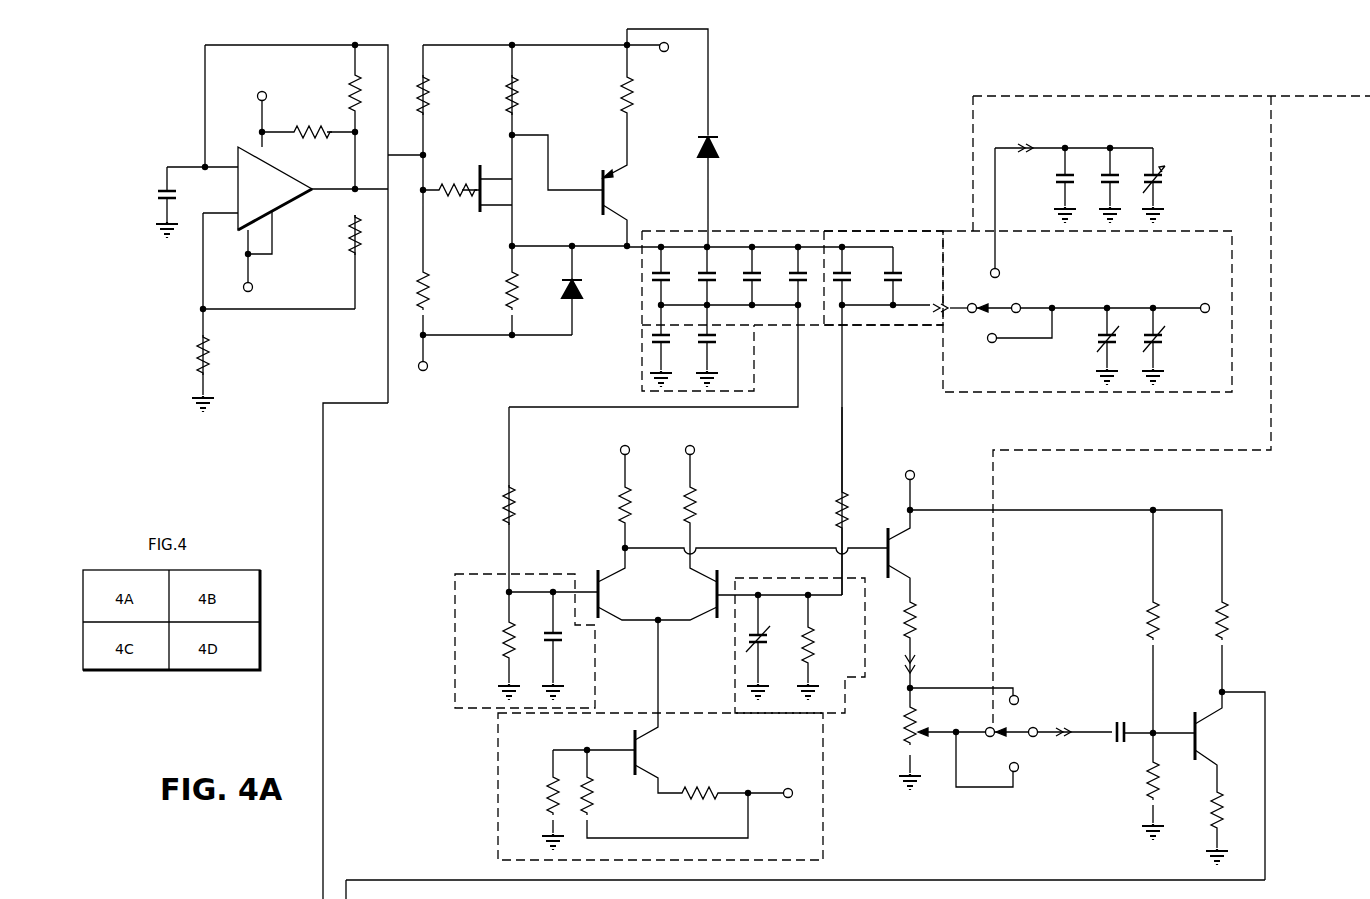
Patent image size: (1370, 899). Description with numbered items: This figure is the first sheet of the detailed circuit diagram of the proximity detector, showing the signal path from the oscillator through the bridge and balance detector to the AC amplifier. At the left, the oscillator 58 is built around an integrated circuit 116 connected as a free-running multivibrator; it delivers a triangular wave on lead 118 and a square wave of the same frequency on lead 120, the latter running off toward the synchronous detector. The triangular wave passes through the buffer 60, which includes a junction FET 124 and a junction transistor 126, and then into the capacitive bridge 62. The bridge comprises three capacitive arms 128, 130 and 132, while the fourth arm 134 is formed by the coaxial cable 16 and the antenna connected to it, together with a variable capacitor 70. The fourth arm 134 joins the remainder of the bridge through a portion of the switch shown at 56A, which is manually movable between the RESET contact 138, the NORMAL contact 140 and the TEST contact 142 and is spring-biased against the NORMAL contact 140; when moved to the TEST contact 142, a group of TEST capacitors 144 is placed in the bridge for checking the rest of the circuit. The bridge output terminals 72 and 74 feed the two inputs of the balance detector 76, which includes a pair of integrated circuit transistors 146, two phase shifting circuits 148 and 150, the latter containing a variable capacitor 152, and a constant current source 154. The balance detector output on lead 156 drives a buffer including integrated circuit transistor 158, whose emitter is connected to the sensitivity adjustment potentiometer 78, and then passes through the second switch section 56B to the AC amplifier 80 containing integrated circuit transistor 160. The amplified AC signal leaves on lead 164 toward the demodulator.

The oscillator 58 is at (166, 150).
The buffer 60 is at (381, 42).
The integrated circuit 116 is at (246, 160).
The lead 118 is at (404, 157).
The lead 120 is at (349, 403).
The junction FET 124 is at (477, 170).
The junction transistor 126 is at (600, 170).
The capacitive arm 128 is at (642, 308).
The capacitive arm 130 is at (642, 380).
The capacitive bridge 62 is at (760, 215).
The output terminal 72 is at (796, 312).
The output terminal 74 is at (840, 312).
The capacitive arm 132 is at (862, 326).
The fourth arm 134 is at (1114, 392).
The RESET contact 138 is at (984, 340).
The NORMAL contact 140 is at (1018, 314).
The switch portion 56A is at (1037, 350).
The TEST contact 142 is at (996, 266).
The TEST capacitors 144 is at (1112, 136).
The variable capacitor 70 is at (1102, 336).
The coaxial cable 16 is at (1204, 307).
The balance detector 76 is at (758, 526).
The integrated circuit transistors 146 is at (596, 574).
The phase shifting circuit 148 is at (474, 574).
The phase shifting circuit 150 is at (736, 700).
The variable capacitor 152 is at (752, 632).
The constant current source 154 is at (498, 778).
The lead 156 is at (775, 550).
The integrated circuit transistor 158 is at (885, 534).
The integrated circuit transistor 160 is at (1190, 718).
The lead 164 is at (363, 878).
The sensitivity adjustment potentiometer 78 is at (901, 778).
The AC amplifier 80 is at (1257, 663).
The switch section 56B is at (997, 799).